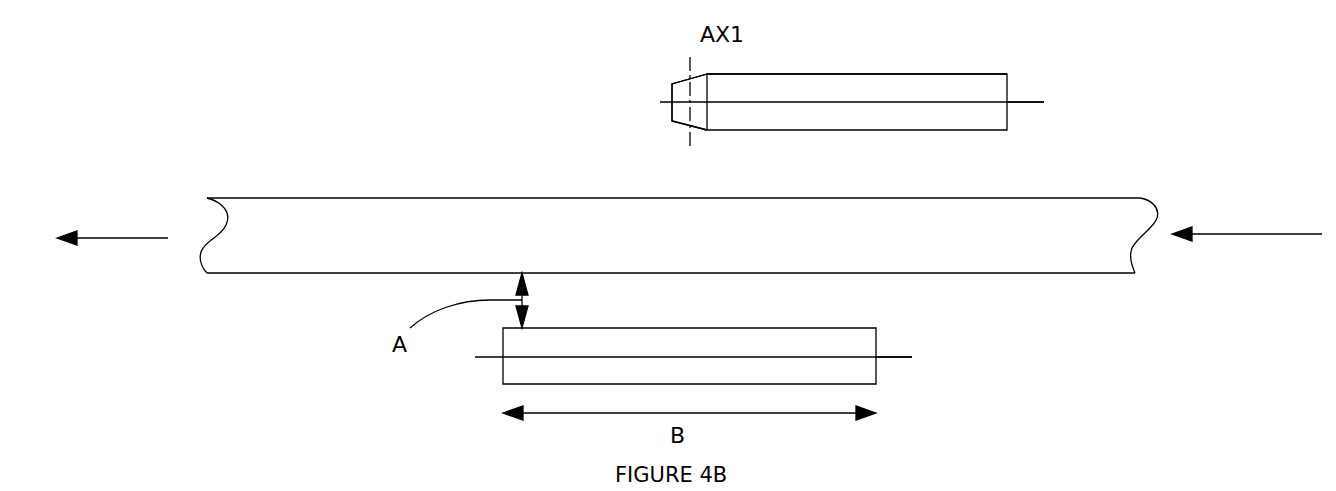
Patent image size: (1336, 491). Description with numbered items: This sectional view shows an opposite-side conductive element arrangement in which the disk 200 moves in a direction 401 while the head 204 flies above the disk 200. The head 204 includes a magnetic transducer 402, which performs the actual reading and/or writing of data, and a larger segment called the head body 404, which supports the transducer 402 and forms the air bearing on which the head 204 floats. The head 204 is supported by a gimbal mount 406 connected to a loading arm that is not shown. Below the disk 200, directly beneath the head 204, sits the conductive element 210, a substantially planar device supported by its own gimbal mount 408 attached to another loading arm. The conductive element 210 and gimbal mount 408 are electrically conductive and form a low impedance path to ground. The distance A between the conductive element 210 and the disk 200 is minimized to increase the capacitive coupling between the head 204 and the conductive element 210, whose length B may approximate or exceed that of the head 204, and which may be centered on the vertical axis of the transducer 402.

The disk 200 is at (1043, 253).
The head 204 is at (802, 53).
The conductive element 210 is at (885, 375).
The direction 401 is at (1238, 233).
The magnetic transducer 402 is at (683, 81).
The head body 404 is at (932, 74).
The gimbal mount 406 is at (1025, 102).
The gimbal mount 408 is at (904, 357).